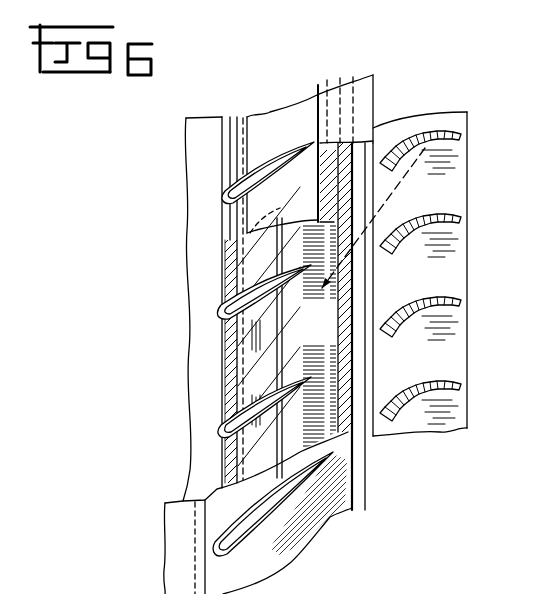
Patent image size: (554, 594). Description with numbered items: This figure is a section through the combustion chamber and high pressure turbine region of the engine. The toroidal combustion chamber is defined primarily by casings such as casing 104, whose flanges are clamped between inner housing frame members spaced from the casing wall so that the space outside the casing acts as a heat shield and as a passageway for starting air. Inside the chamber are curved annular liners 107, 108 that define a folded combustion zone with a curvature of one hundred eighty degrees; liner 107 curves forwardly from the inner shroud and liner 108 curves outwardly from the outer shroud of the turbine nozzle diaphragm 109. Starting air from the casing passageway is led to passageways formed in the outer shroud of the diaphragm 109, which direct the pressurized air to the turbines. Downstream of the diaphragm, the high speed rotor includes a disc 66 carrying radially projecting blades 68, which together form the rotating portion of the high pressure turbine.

The casing 104 is at (367, 102).
The liner 108 is at (191, 328).
The turbine nozzle diaphragm 109 is at (216, 373).
The liner 107 is at (163, 542).
The blades 68 is at (450, 314).
The disc 66 is at (468, 348).